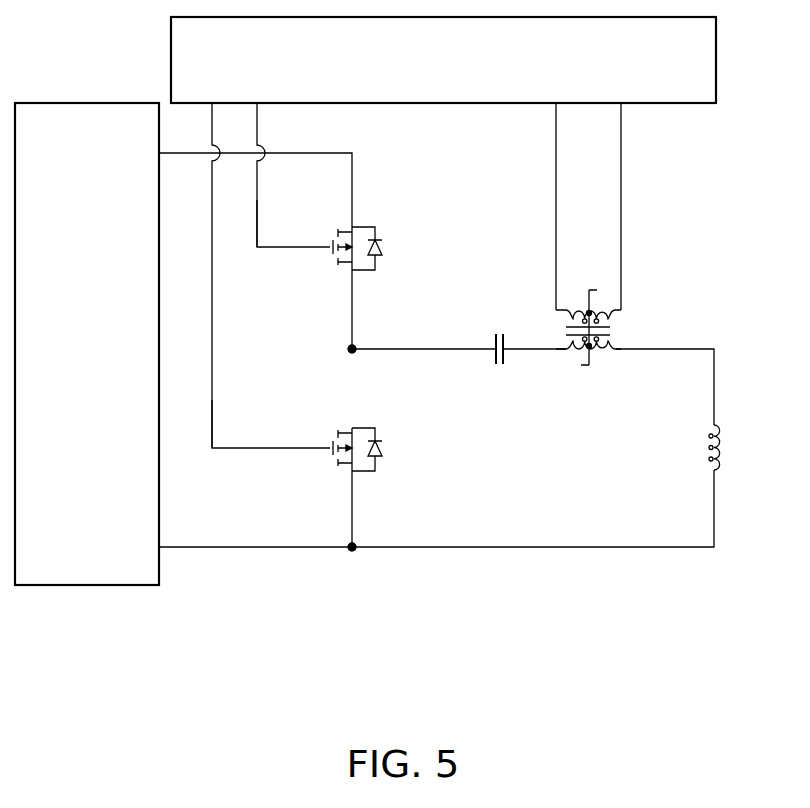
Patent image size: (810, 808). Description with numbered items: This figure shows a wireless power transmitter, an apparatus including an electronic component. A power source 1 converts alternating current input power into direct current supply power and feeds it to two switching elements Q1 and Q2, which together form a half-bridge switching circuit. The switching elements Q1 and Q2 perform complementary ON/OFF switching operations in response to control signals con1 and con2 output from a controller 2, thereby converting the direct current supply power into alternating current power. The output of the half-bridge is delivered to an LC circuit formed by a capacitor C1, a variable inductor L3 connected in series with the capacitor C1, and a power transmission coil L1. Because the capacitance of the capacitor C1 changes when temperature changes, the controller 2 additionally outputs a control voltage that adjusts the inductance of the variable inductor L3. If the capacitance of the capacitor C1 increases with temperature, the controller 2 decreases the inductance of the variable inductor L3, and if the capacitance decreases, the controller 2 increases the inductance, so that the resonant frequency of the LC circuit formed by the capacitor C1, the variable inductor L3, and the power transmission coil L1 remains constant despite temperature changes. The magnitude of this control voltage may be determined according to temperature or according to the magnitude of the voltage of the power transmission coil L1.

The power source 1 is at (52, 103).
The controller 2 is at (716, 59).
The switching element Q1 is at (340, 278).
The switching element Q2 is at (340, 478).
The capacitor C1 is at (499, 333).
The power transmission coil L1 is at (733, 447).
The variable inductor L3 is at (588, 343).
The control signal con1 is at (284, 238).
The control signal con2 is at (261, 439).